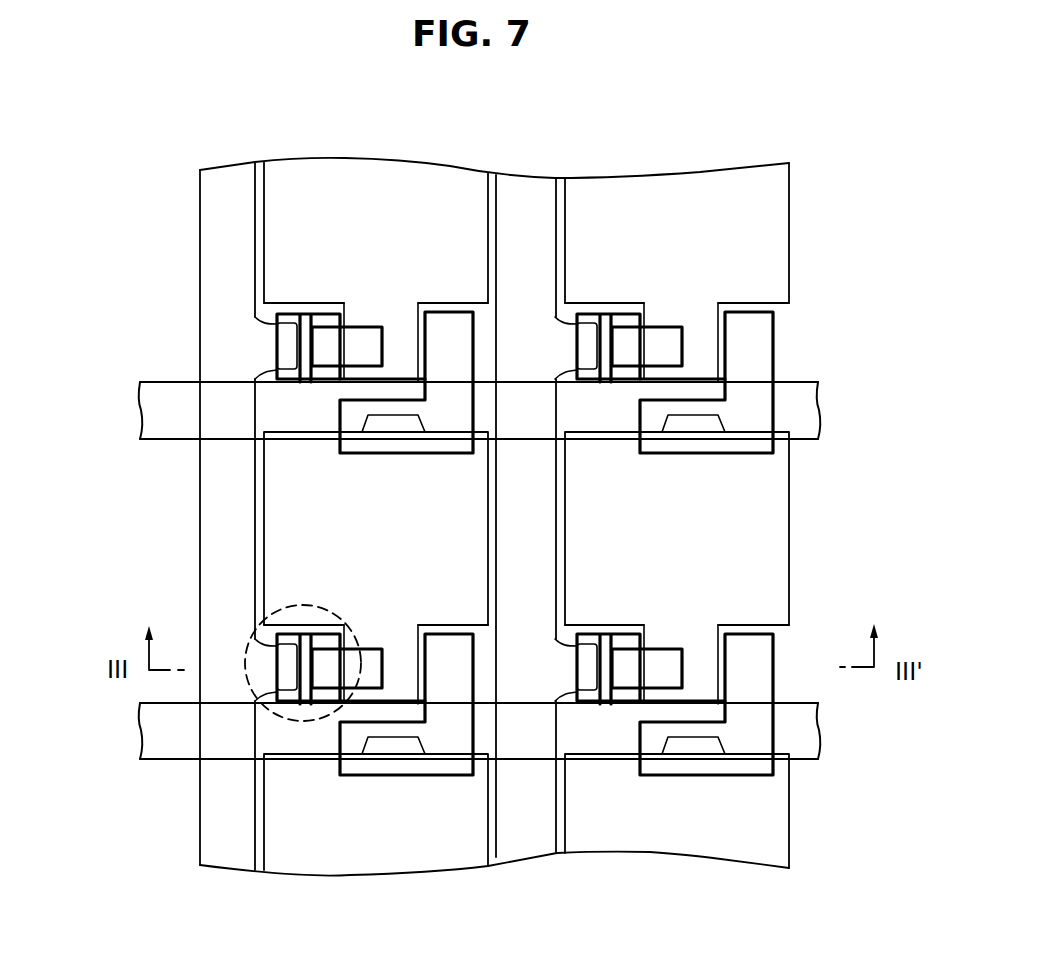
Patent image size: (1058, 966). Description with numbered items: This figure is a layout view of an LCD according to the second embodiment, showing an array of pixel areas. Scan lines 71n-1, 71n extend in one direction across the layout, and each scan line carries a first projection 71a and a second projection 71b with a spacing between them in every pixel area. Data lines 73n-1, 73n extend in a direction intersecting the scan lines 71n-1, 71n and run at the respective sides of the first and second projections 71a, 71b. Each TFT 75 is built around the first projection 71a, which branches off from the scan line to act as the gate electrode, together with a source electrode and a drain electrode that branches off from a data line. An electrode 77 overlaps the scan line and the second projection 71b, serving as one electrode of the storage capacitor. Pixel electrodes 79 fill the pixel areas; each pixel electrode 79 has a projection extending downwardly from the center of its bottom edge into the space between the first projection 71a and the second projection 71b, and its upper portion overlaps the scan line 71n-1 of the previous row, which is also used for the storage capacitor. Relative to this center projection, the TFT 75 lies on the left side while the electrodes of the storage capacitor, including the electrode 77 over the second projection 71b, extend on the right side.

The first projection 71a is at (305, 315).
The second projection 71b is at (460, 312).
The scan line 71n-1 is at (162, 412).
The scan line 71n is at (150, 740).
The data line 73n-1 is at (230, 855).
The data line 73n is at (528, 843).
The TFT 75 is at (278, 613).
The electrode 77 is at (421, 305).
The pixel electrode 79 is at (285, 493).